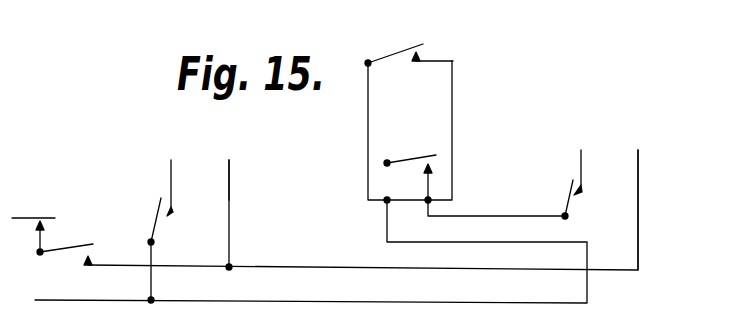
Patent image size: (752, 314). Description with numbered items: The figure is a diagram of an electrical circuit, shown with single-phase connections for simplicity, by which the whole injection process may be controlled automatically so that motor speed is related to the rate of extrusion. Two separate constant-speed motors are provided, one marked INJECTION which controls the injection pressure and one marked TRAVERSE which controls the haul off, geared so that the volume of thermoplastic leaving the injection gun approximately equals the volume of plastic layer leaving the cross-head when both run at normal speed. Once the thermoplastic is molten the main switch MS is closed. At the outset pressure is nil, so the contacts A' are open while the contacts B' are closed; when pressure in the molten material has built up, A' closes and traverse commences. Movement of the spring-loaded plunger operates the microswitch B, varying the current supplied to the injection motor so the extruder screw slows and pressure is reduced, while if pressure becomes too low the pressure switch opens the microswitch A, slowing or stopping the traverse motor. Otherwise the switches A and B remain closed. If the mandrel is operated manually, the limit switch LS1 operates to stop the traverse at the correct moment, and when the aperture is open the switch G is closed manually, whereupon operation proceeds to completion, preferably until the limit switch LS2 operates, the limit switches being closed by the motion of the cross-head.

The limit switch LS2 is at (34, 223).
The main switch MS is at (76, 234).
The injection motor INJECTION is at (195, 176).
The contacts B' is at (149, 210).
The microswitch B is at (382, 134).
The switch G is at (409, 47).
The limit switch LS1 is at (474, 172).
The contacts A' is at (555, 193).
The traverse motor TRAVERSE is at (627, 156).
The microswitch A is at (667, 208).